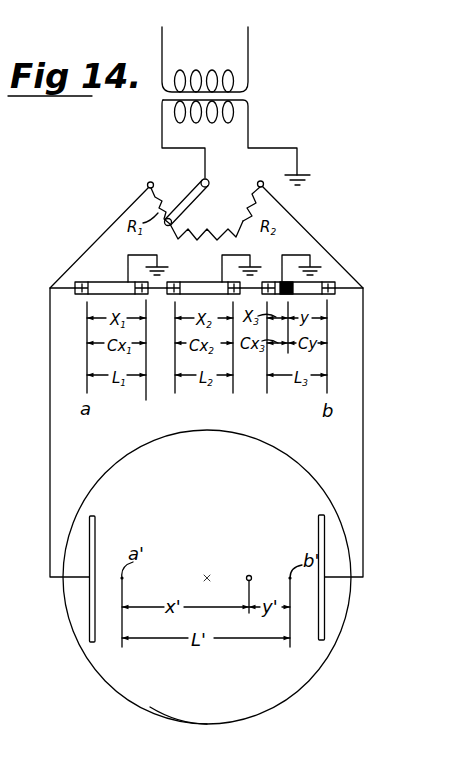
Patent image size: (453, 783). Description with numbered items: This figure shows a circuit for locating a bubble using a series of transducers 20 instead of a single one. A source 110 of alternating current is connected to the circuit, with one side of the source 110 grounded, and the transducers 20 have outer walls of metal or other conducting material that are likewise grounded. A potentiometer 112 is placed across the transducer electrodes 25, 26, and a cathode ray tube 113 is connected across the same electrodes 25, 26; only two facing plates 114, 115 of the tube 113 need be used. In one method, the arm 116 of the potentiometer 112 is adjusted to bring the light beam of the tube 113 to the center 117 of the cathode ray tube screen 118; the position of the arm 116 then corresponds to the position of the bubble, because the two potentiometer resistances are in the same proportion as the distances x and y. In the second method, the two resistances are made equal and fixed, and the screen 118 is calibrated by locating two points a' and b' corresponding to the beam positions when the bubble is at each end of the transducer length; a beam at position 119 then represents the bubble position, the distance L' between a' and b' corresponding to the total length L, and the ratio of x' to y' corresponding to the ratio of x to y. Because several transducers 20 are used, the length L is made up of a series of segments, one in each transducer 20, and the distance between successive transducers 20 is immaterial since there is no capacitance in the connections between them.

The source of alternating current 110 is at (245, 97).
The potentiometer 112 is at (160, 206).
The arm 116 is at (196, 202).
The transducer 20 is at (103, 286).
The transducer electrode 25 is at (53, 290).
The transducer electrode 26 is at (343, 292).
The cathode ray tube 113 is at (286, 703).
The facing plate 114 is at (96, 532).
The facing plate 115 is at (318, 526).
The center of the cathode ray tube screen 117 is at (207, 578).
The cathode ray tube screen 118 is at (170, 711).
The beam position 119 is at (251, 576).